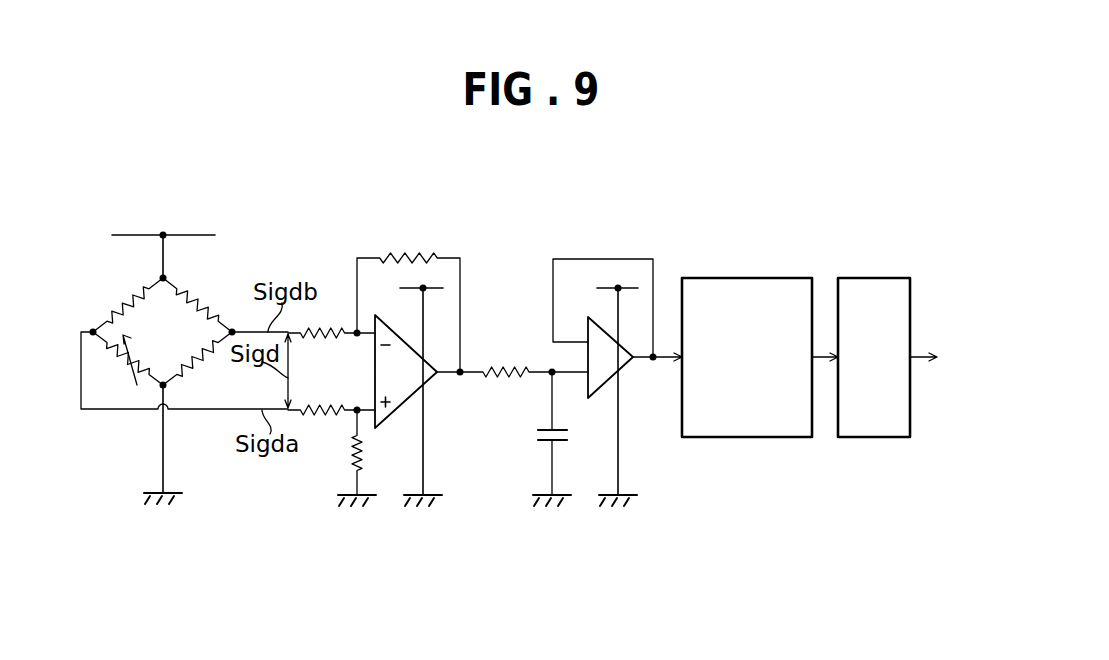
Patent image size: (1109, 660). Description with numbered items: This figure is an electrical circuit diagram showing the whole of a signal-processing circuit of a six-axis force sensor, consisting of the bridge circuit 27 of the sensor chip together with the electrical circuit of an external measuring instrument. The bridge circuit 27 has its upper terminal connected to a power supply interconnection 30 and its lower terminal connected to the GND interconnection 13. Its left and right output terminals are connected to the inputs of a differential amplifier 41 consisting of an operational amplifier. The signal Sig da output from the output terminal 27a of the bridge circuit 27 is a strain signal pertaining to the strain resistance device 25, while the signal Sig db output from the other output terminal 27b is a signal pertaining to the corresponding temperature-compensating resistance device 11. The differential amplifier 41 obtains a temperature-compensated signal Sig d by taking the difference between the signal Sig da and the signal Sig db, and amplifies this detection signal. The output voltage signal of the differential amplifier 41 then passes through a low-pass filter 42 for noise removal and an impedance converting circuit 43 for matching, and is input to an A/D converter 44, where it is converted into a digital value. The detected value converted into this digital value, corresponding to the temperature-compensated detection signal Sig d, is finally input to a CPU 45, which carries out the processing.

The power supply interconnection 30 is at (197, 235).
The bridge circuit 27 is at (216, 286).
The output terminal 27a is at (93, 330).
The other output terminal 27b is at (233, 330).
The strain resistance device 25 is at (122, 357).
The temperature-compensating resistance device 11 is at (203, 363).
The GND interconnection 13 is at (173, 490).
The differential amplifier 41 is at (456, 239).
The low-pass filter 42 is at (522, 428).
The impedance converting circuit 43 is at (616, 239).
The A/D converter 44 is at (752, 278).
The CPU 45 is at (876, 278).